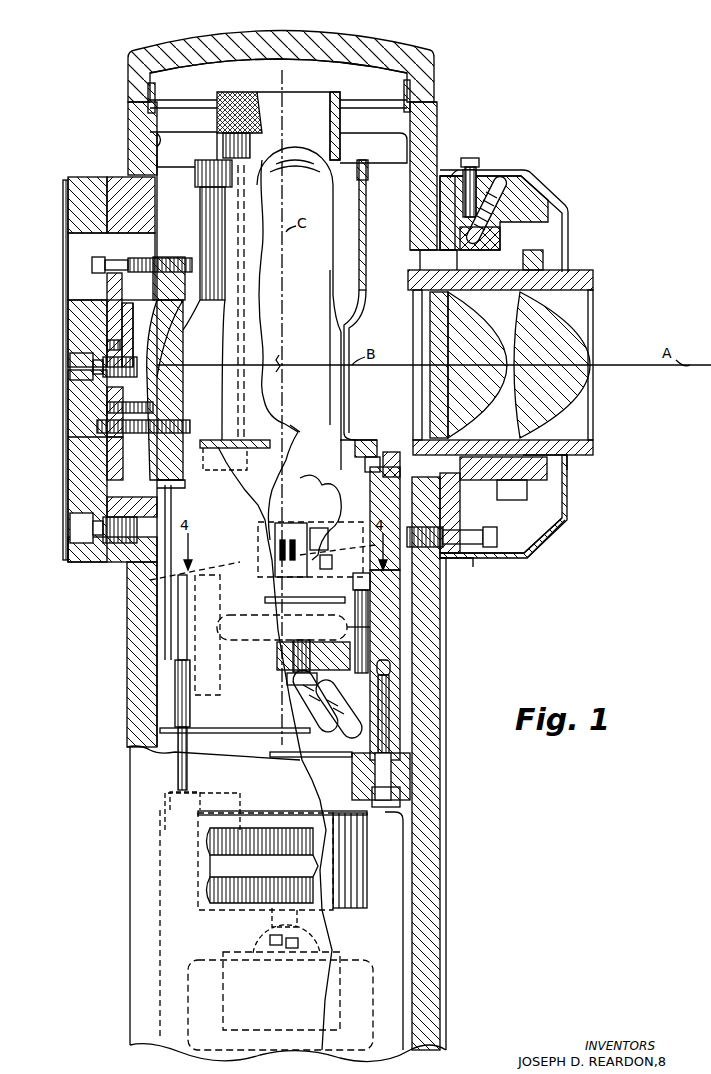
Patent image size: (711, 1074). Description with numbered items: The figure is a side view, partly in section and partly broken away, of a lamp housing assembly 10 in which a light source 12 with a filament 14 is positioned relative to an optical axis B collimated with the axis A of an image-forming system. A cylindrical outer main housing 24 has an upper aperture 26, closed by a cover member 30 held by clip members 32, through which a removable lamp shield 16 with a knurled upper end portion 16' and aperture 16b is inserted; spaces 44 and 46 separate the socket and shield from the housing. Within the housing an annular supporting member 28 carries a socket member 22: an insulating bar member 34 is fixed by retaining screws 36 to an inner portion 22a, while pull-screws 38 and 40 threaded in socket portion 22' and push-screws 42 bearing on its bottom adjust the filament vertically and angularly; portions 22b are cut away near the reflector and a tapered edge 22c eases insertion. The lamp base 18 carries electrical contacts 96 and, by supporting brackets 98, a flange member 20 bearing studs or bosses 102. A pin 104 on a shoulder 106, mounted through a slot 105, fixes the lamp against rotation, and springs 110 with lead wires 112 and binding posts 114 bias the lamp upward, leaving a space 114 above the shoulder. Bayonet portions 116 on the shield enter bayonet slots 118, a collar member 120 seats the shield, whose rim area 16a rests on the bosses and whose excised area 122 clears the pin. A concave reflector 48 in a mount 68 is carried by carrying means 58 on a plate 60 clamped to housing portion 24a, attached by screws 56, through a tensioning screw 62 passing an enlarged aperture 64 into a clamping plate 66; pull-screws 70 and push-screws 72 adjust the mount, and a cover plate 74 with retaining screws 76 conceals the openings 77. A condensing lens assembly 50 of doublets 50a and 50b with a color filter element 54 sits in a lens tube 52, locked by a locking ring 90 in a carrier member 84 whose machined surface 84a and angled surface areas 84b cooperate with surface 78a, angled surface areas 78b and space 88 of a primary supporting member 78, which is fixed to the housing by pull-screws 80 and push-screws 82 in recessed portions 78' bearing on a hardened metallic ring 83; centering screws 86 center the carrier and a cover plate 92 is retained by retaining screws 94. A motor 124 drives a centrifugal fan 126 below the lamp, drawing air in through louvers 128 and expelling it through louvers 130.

The assembly 10 is at (120, 655).
The light source 12 is at (306, 284).
The filament 14 is at (280, 365).
The lamp shield 16 is at (367, 300).
The knurled upper end portion 16' is at (222, 118).
The circular rim area 16a is at (335, 530).
The aperture 16b is at (296, 114).
The lamp base 18 is at (310, 555).
The flange member 20 is at (443, 575).
The socket member 22 is at (405, 758).
The socket portion 22' is at (414, 730).
The inner portion of socket member 22a is at (400, 627).
The cut-away portions of socket member 22b is at (165, 485).
The tapered edge 22c is at (398, 470).
The outer main housing 24 is at (437, 138).
The plate-like housing portion 24a is at (68, 475).
The aperture 26 is at (336, 80).
The annular supporting member 28 is at (323, 758).
The cover member 30 is at (296, 40).
The clip members 32 is at (410, 90).
The bar member 34 is at (321, 701).
The retaining screws 36 is at (362, 676).
The pull-screw 38 is at (387, 810).
The pull-screw 40 is at (165, 800).
The push-screws 42 is at (275, 738).
The space 44 is at (160, 613).
The space 46 is at (166, 188).
The concave reflector 48 is at (195, 320).
The condensing lens assembly 50 is at (600, 323).
The doublet 50a is at (430, 384).
The doublet 50b is at (593, 382).
The lens tube 52 is at (575, 278).
The color filter element 54 is at (593, 448).
The screws 56 is at (70, 535).
The carrying means 58 is at (102, 290).
The plate 60 is at (120, 456).
The tensioning screw 62 is at (70, 375).
The enlarged aperture 64 is at (107, 343).
The clamping plate 66 is at (127, 312).
The reflector mount 68 is at (163, 264).
The pull-screws 70 is at (52, 429).
The push-screws 72 is at (68, 410).
The cover plate 74 is at (66, 232).
The retaining screws 76 is at (63, 210).
The openings 77 is at (80, 268).
The primary supporting member 78 is at (494, 202).
The recessed portions 78' is at (548, 541).
The machined surface 78a is at (483, 535).
The angled surface areas 78b is at (455, 215).
The pull-screws 80 is at (488, 575).
The push-screws 82 is at (430, 314).
The hardened metallic ring 83 is at (461, 163).
The carrier member 84 is at (476, 480).
The machined surface 84a is at (512, 490).
The angled surface areas 84b is at (433, 260).
The centering and retaining screws 86 is at (527, 178).
The space 88 is at (503, 243).
The locking ring 90 is at (552, 466).
The cover plate 92 is at (567, 504).
The retaining screws 94 is at (480, 165).
The electrical contacts 96 is at (278, 600).
The supporting brackets 98 is at (330, 569).
The studs or bosses 102 is at (331, 539).
The pin 104 is at (291, 540).
The slot 105 is at (300, 440).
The shoulder 106 is at (400, 590).
The springs 110 is at (282, 637).
The lead wires 112 is at (312, 726).
The binding posts 114 is at (132, 578).
The bayonet portions 116 is at (250, 470).
The bayonet slots 118 is at (390, 455).
The collar member 120 is at (372, 448).
The excised area 122 is at (317, 517).
The motor 124 is at (367, 1005).
The centrifugal fan 126 is at (367, 865).
The louvers 128 is at (155, 140).
The louvers 130 is at (205, 868).